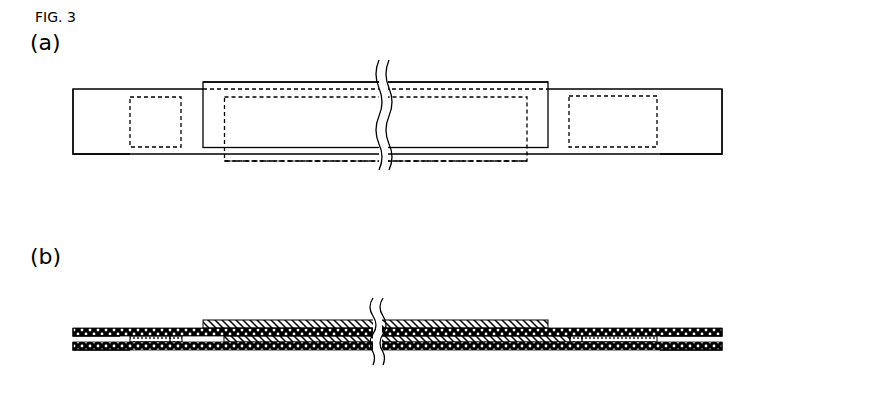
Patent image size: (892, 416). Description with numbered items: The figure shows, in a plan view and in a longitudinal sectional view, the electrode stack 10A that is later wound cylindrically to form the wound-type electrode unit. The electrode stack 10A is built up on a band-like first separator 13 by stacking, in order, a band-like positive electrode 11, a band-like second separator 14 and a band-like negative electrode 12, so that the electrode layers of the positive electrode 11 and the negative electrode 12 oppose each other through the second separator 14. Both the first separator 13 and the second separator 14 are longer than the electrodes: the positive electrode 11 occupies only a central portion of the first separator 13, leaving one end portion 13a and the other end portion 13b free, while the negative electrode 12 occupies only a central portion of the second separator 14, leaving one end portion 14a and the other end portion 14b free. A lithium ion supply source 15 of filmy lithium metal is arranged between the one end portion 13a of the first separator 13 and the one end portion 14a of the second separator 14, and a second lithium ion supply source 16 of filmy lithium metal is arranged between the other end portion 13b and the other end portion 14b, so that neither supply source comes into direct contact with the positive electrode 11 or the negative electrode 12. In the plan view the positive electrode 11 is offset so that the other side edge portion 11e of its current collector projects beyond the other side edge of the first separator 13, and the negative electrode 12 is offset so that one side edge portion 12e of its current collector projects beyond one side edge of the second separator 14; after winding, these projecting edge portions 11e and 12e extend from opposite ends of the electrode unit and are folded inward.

The electrode stack 10A is at (722, 82).
The positive electrode 11 is at (288, 96).
The other side edge portion of the positive electrode current collector 11e is at (288, 162).
The negative electrode 12 is at (468, 148).
The one side edge portion of the negative electrode current collector 12e is at (457, 84).
The first separator 13 is at (270, 351).
The one end portion of the first separator 13a is at (125, 351).
The other end portion of the first separator 13b is at (652, 350).
The second separator 14 is at (677, 89).
The one end portion of the second separator 14a is at (118, 157).
The other end portion of the second separator 14b is at (620, 155).
The lithium ion supply source 15 is at (147, 97).
The lithium ion supply source 16 is at (600, 96).